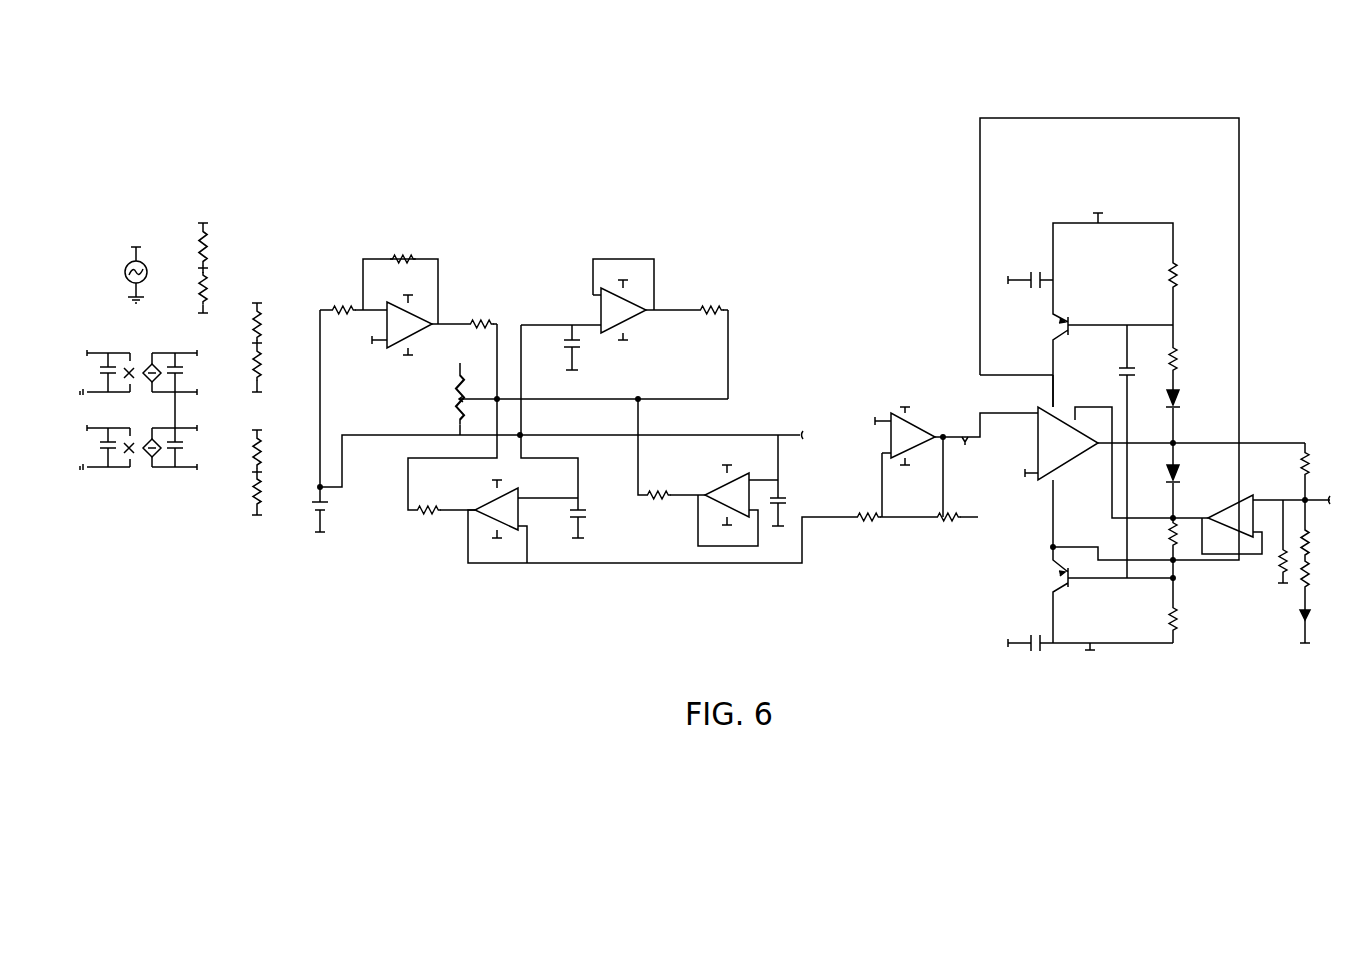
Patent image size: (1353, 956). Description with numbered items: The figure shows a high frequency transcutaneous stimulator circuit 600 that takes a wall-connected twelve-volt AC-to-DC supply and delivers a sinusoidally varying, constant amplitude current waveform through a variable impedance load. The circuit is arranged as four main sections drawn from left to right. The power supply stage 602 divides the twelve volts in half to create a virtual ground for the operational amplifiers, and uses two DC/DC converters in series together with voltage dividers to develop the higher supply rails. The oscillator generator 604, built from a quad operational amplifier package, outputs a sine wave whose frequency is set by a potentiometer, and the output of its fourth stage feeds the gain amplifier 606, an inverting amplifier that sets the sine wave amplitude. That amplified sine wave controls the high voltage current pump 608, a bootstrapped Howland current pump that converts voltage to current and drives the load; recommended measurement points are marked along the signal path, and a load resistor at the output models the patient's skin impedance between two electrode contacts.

The high frequency transcutaneous stimulator circuit 600 is at (218, 75).
The power supply stage 602 is at (171, 346).
The oscillator generator 604 is at (583, 393).
The gain amplifier 606 is at (944, 438).
The high voltage current pump 608 is at (1166, 355).